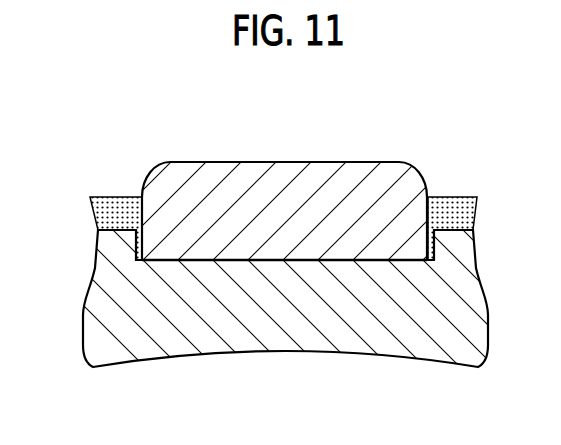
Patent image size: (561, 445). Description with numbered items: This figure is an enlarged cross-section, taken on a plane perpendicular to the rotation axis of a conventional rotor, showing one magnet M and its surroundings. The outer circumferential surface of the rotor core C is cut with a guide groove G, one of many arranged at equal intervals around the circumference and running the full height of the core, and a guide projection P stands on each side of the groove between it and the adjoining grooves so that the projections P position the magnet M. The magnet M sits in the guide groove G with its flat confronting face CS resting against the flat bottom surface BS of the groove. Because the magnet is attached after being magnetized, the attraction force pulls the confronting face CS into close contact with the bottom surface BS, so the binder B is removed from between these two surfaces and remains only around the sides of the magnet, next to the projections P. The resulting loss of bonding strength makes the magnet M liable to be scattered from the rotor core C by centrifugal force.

The magnet M is at (295, 187).
The confronting face CS is at (340, 258).
The binder B is at (115, 225).
The guide projection P is at (117, 248).
The guide groove G is at (223, 268).
The bottom surface BS is at (293, 262).
The rotor core C is at (373, 337).